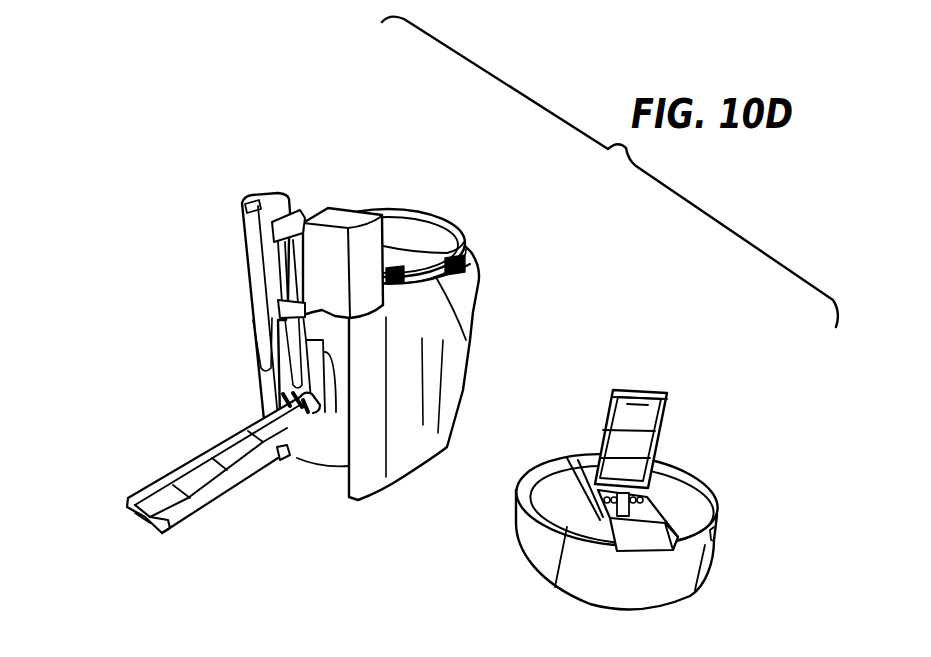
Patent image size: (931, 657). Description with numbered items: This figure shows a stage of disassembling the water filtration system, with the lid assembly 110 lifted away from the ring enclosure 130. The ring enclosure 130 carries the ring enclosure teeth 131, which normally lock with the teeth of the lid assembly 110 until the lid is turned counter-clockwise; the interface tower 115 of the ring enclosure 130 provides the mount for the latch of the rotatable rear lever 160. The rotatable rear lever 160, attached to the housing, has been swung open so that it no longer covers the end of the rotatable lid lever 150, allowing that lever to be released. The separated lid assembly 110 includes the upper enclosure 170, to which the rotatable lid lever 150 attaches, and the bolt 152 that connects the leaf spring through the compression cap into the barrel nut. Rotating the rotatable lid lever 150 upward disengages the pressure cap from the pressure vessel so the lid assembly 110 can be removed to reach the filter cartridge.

The lid assembly 110 is at (609, 485).
The interface tower 115 is at (237, 203).
The ring enclosure 130 is at (440, 212).
The ring enclosure teeth 131 is at (407, 287).
The rotatable lid lever 150 is at (687, 409).
The bolt 152 is at (660, 520).
The rotatable rear lever 160 is at (158, 430).
The upper enclosure 170 is at (517, 529).